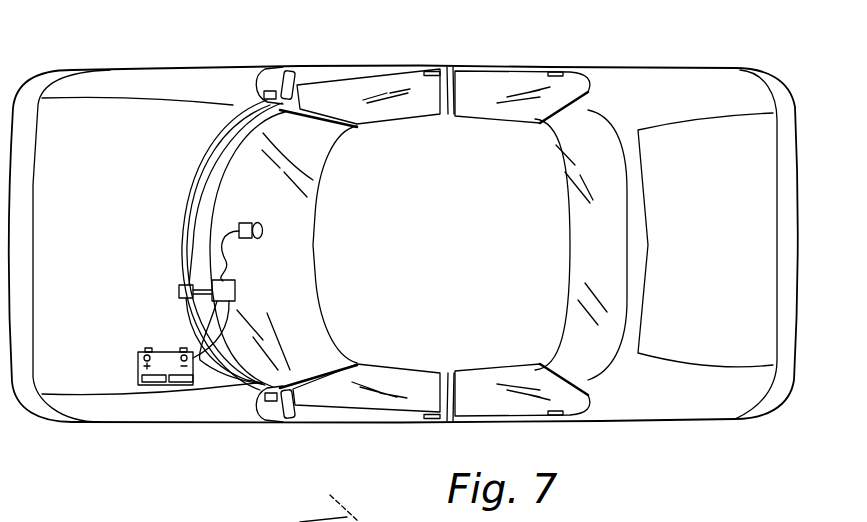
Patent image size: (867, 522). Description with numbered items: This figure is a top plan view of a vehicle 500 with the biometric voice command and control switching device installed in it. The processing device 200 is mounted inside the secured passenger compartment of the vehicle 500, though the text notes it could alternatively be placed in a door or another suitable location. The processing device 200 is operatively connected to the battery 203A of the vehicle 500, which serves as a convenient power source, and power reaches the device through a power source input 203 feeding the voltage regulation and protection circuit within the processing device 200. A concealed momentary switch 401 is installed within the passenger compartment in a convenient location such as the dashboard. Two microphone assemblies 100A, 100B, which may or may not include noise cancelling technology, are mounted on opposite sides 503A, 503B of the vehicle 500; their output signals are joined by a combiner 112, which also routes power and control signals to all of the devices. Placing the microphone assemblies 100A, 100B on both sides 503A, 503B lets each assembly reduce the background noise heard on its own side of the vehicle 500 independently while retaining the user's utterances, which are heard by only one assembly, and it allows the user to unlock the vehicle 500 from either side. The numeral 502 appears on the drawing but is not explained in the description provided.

The vehicle 500 is at (143, 98).
The door 502 is at (390, 418).
The side of the vehicle 503A is at (192, 410).
The side of the vehicle 503B is at (218, 68).
The microphone assembly 100A is at (282, 418).
The microphone assembly 100B is at (284, 68).
The concealed momentary switch 401 is at (245, 222).
The processing device 200 is at (235, 292).
The combiner 112 is at (178, 291).
The power source input 203 is at (225, 342).
The battery 203A is at (140, 352).